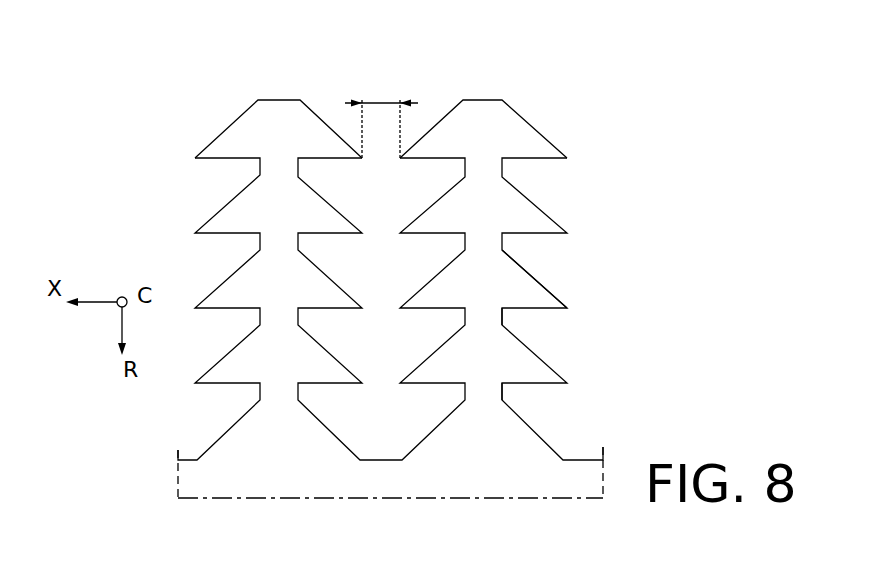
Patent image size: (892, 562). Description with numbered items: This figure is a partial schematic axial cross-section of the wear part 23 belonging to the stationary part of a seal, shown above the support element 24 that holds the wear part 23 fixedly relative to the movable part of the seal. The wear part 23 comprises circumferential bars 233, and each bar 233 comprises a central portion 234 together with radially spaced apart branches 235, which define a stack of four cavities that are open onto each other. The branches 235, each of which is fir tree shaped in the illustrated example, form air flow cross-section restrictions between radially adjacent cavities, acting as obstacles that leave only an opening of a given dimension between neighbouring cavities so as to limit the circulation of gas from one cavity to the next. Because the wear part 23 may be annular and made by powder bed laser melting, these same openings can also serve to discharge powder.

The wear part 23 is at (452, 243).
The circumferential bar 233 is at (475, 105).
The central portion 234 is at (490, 242).
The branch 235 is at (530, 293).
The support element 24 is at (385, 477).